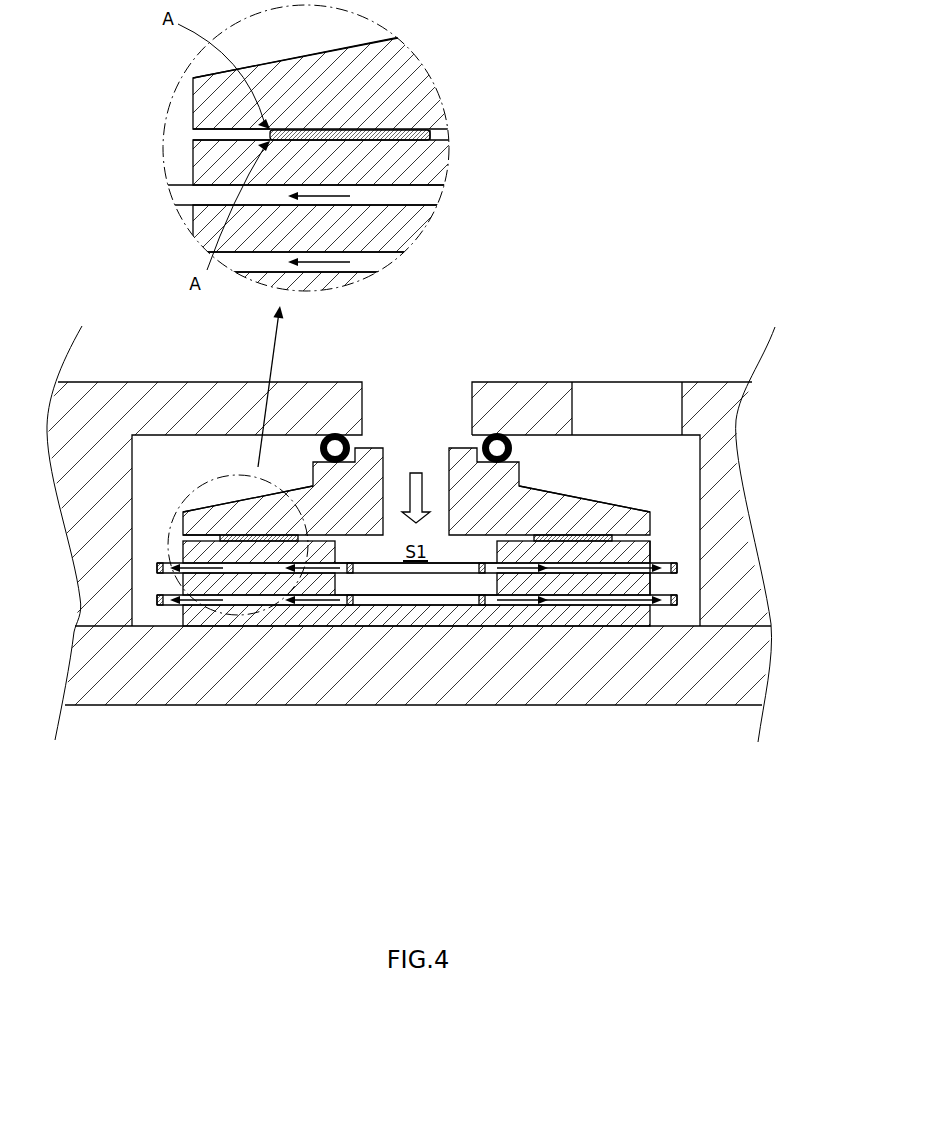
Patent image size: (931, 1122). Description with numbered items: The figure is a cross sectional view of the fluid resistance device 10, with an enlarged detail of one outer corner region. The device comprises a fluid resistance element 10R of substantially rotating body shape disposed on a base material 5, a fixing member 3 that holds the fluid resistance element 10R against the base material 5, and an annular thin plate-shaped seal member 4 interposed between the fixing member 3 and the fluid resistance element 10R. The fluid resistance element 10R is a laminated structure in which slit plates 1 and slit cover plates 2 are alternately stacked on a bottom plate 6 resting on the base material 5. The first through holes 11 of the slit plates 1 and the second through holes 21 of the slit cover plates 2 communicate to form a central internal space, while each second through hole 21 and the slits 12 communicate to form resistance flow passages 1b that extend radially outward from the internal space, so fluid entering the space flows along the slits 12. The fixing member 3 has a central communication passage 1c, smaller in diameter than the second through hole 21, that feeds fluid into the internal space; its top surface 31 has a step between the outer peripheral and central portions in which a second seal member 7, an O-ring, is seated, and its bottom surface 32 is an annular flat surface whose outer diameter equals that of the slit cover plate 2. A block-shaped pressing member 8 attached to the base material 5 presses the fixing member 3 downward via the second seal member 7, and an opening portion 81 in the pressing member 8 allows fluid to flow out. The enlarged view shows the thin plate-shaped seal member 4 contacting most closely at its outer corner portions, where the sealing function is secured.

The slit plate 1 is at (680, 568).
The resistance flow passages 1b is at (247, 572).
The communication passage 1c is at (408, 462).
The slit cover plate 2 is at (652, 550).
The fixing member 3 is at (613, 502).
The thin plate-shaped seal member 4 is at (262, 533).
The base material 5 is at (640, 705).
The bottom plate 6 is at (652, 614).
The second seal member 7 is at (314, 446).
The pressing member 8 is at (695, 382).
The opening portion 81 is at (626, 382).
The fluid resistance device 10 is at (90, 304).
The fluid resistance element 10R is at (668, 535).
The first through hole 11 is at (447, 567).
The slits 12 is at (160, 565).
The second through hole 21 is at (389, 584).
The top surface 31 is at (379, 447).
The bottom surface 32 is at (186, 540).